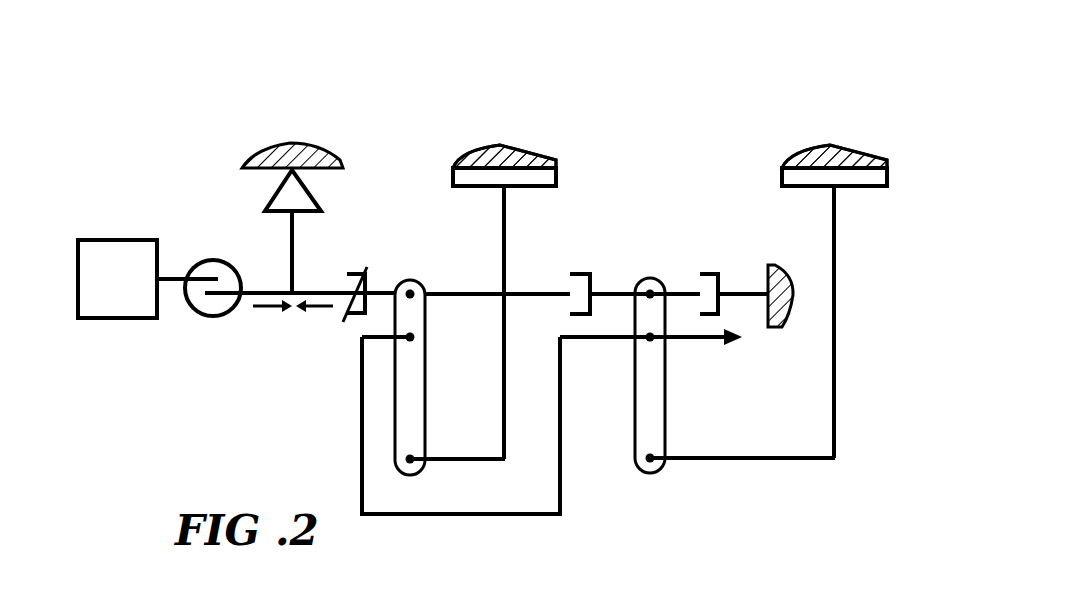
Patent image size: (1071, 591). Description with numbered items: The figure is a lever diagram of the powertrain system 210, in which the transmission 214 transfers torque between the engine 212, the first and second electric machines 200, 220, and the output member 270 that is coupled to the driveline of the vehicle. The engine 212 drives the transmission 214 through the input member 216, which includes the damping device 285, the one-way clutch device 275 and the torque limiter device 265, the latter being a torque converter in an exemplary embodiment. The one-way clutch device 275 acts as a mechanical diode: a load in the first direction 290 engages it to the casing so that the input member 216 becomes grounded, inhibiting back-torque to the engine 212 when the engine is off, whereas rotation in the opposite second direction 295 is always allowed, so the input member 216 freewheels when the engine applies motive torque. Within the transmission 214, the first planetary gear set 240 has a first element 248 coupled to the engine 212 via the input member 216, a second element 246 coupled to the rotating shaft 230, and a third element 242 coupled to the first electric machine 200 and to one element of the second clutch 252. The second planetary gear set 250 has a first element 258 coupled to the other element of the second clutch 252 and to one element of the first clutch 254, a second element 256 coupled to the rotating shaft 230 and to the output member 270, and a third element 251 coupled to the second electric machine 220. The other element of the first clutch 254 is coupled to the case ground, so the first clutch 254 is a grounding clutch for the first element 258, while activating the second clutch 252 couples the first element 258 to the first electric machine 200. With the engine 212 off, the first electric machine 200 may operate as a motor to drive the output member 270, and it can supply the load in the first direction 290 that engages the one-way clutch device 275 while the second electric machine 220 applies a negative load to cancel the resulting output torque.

The powertrain system 210 is at (145, 72).
The transmission 214 is at (198, 144).
The engine 212 is at (117, 279).
The damping device 285 is at (205, 315).
The input member 216 is at (260, 288).
The one-way clutch device 275 is at (268, 200).
The second direction 295 is at (260, 312).
The first direction 290 is at (318, 312).
The torque limiter device 265 is at (356, 275).
The first planetary gear set 240 is at (420, 474).
The first element 248 is at (416, 290).
The second element 246 is at (418, 337).
The third element 242 is at (418, 455).
The first electric machine 200 is at (558, 180).
The rotating shaft 230 is at (360, 490).
The second clutch 252 is at (580, 275).
The first element 258 is at (656, 282).
The first clutch 254 is at (716, 275).
The second planetary gear set 250 is at (665, 472).
The second element 256 is at (645, 340).
The output member 270 is at (705, 342).
The third element 251 is at (640, 470).
The second electric machine 220 is at (782, 180).